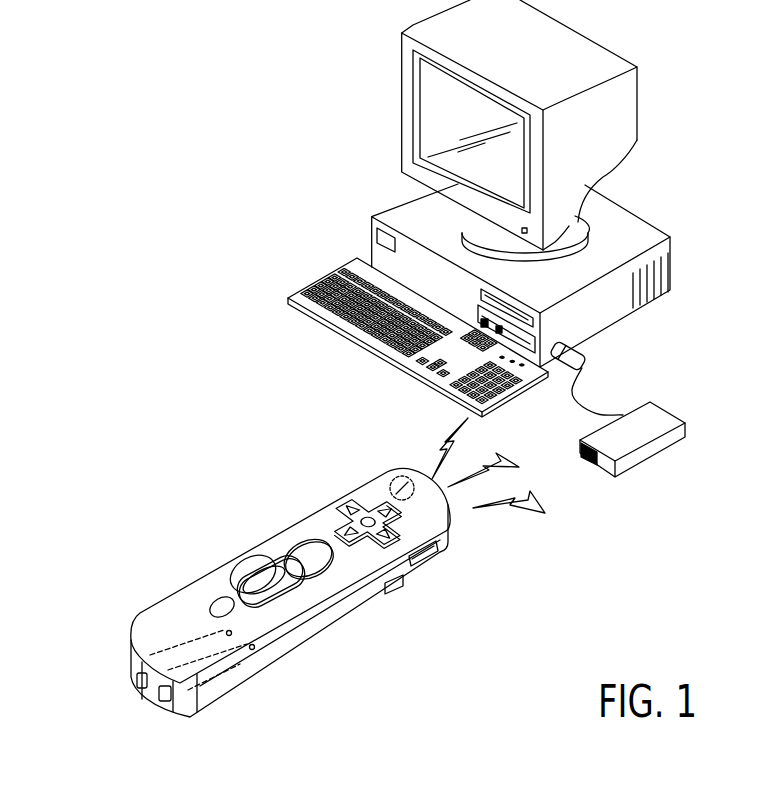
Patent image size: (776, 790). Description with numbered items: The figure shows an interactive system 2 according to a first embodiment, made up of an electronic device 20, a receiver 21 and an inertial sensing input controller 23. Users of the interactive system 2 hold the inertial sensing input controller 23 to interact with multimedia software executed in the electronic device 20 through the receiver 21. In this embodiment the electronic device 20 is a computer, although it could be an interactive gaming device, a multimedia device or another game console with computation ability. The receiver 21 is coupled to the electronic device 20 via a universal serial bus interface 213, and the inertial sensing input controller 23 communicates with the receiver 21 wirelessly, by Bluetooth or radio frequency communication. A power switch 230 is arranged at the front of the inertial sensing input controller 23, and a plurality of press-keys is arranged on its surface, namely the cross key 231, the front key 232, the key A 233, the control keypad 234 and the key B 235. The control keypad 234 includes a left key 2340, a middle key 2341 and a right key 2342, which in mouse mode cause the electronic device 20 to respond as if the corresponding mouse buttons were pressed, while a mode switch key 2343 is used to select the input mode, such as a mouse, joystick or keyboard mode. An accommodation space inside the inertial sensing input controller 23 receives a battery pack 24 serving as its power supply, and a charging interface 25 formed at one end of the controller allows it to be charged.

The interactive system 2 is at (134, 131).
The electronic device 20 is at (378, 103).
The universal serial bus (USB) interface 213 is at (574, 349).
The receiver 21 is at (645, 428).
The inertial sensing input controller 23 is at (110, 631).
The power switch 230 is at (397, 478).
The cross key 231 is at (343, 512).
The front key 232 is at (395, 590).
The key A 233 is at (300, 548).
The control keypad 234 is at (229, 552).
The left key 2340 is at (232, 571).
The middle key 2341 is at (261, 588).
The right key 2342 is at (287, 598).
The mode switch key 2343 is at (437, 549).
The key B 235 is at (218, 606).
The battery pack 24 is at (210, 675).
The charging interface 25 is at (137, 686).